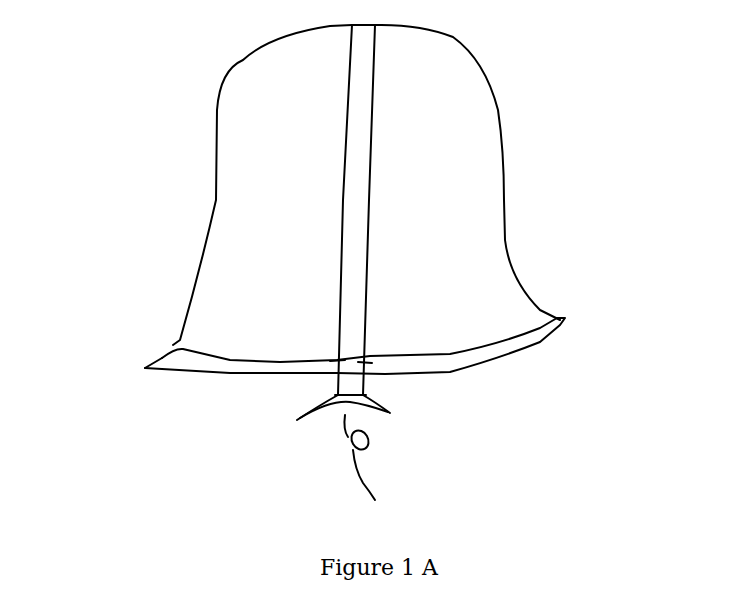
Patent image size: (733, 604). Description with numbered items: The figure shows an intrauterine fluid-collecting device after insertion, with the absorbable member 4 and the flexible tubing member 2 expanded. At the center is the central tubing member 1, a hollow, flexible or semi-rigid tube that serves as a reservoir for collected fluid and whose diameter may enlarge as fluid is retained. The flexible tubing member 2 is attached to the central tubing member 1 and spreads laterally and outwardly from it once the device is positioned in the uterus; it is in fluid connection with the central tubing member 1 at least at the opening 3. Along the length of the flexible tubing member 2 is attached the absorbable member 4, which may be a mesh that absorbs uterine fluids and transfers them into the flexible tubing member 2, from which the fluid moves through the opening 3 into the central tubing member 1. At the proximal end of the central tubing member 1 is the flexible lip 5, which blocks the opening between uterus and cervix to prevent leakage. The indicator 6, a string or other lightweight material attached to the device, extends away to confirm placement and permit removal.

The central tubing member 1 is at (353, 230).
The flexible tubing member 2 is at (160, 360).
The opening 3 is at (337, 362).
The absorbable member 4 is at (248, 117).
The flexible lip 5 is at (392, 390).
The indicator 6 is at (360, 483).